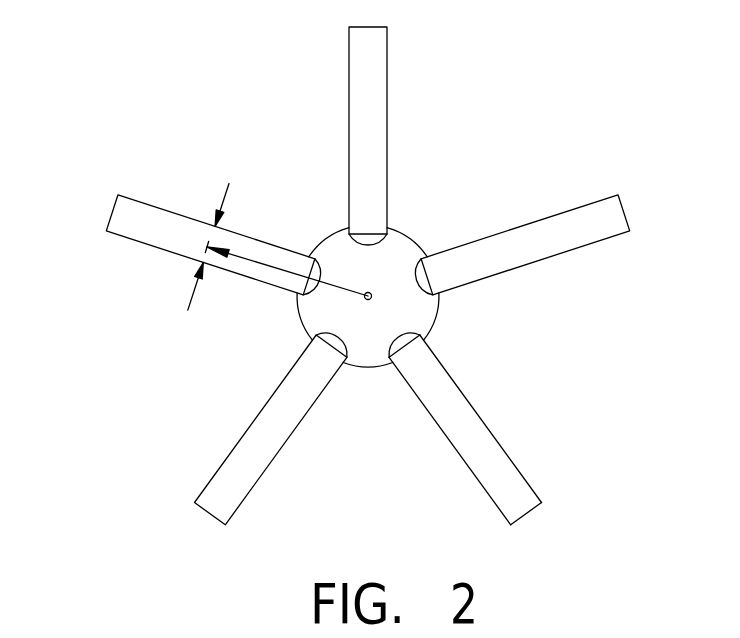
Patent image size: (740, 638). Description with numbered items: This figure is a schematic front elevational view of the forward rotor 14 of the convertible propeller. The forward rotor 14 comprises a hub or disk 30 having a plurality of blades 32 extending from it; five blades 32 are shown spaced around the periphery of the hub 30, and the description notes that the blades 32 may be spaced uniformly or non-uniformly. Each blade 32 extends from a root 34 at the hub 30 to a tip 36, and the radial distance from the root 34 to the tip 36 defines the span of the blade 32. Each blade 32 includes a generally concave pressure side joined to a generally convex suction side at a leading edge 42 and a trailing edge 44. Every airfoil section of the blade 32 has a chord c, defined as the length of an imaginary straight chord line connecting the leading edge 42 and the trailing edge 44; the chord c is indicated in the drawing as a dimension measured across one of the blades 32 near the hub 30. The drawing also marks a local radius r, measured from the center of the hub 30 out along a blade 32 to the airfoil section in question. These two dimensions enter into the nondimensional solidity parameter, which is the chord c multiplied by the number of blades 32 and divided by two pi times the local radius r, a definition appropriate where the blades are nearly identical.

The forward rotor 14 is at (498, 103).
The hub 30 is at (400, 247).
The blades 32 is at (367, 87).
The root 34 is at (408, 372).
The tip 36 is at (527, 512).
The leading edge 42 is at (493, 428).
The trailing edge 44 is at (457, 442).
The chord c is at (232, 193).
The local radius r is at (257, 263).